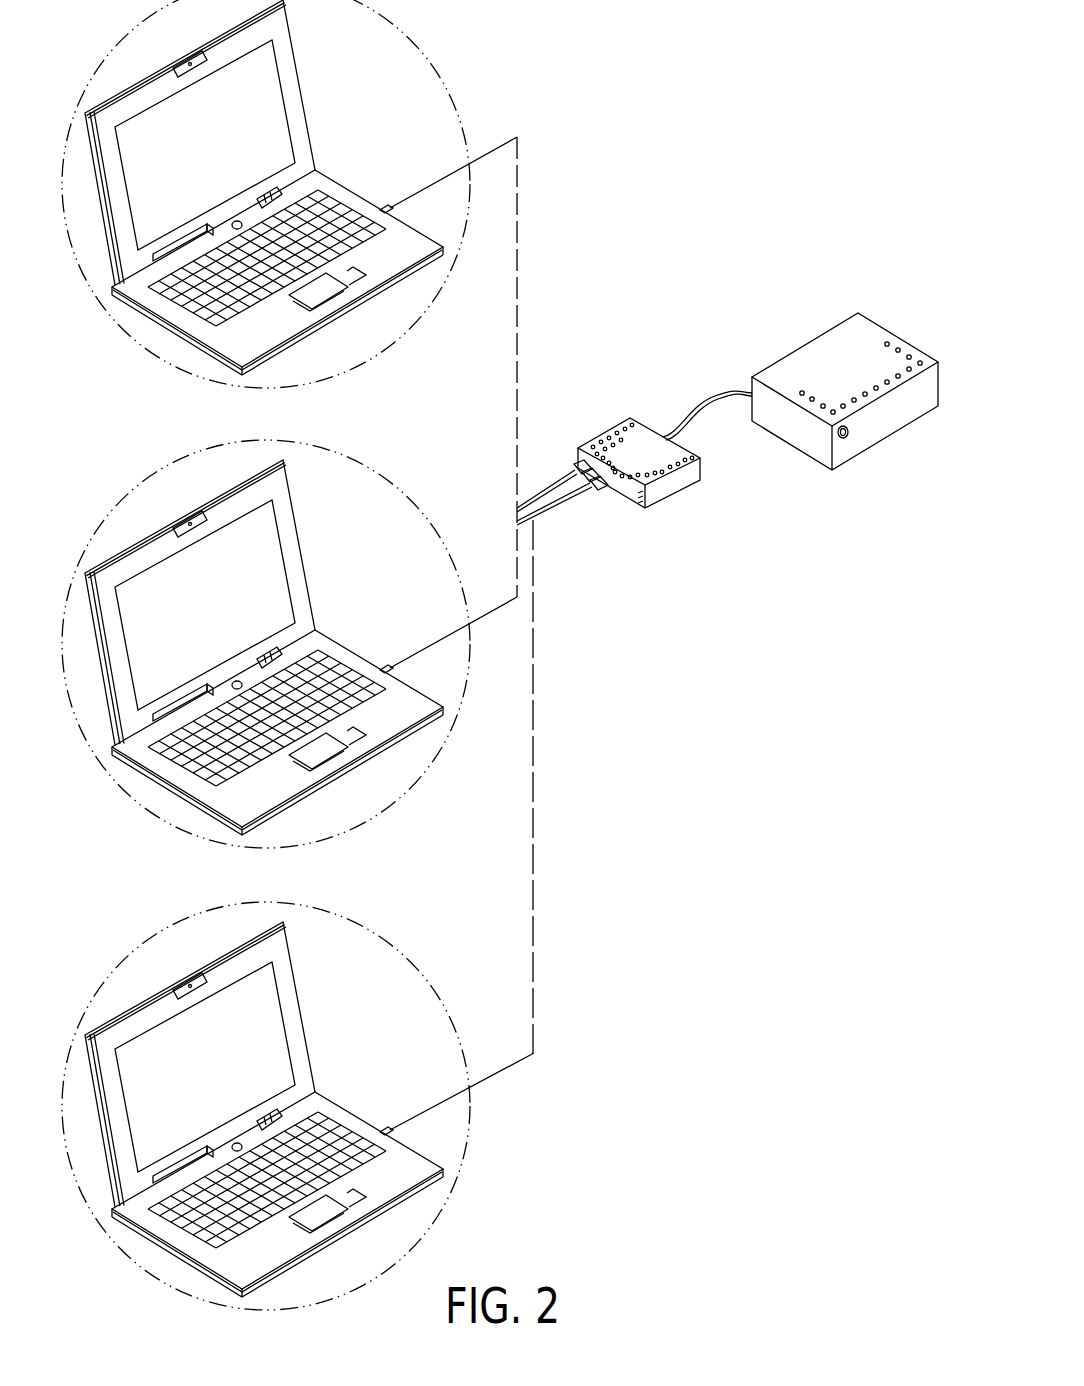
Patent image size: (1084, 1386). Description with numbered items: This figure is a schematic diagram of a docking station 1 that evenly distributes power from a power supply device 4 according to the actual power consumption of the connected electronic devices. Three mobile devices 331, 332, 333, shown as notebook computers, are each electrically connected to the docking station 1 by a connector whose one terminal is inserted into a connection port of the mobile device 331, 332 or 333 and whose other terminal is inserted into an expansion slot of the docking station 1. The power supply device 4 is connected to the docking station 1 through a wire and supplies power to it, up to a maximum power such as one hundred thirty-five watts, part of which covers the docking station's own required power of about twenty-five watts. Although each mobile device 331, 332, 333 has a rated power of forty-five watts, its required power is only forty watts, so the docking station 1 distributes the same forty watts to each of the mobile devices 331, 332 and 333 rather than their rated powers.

The docking station 1 is at (640, 438).
The power supply device 4 is at (818, 347).
The mobile device 331 is at (270, 194).
The mobile device 332 is at (295, 548).
The mobile device 333 is at (270, 1106).